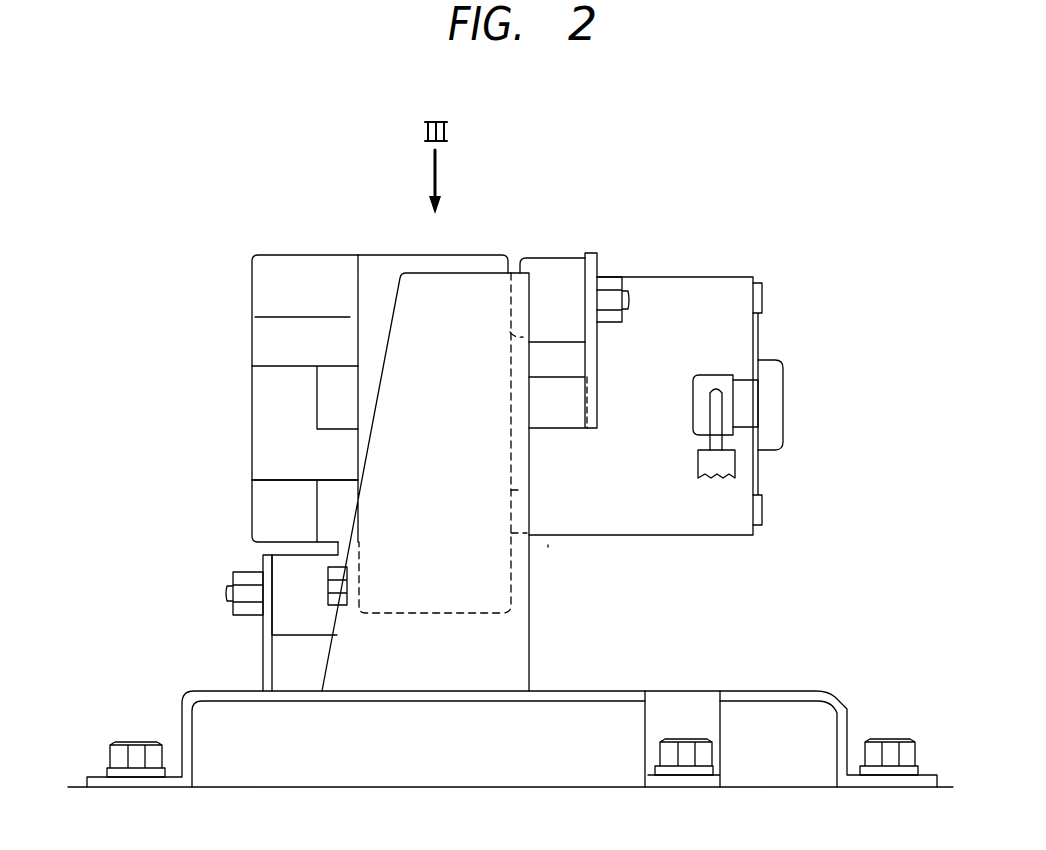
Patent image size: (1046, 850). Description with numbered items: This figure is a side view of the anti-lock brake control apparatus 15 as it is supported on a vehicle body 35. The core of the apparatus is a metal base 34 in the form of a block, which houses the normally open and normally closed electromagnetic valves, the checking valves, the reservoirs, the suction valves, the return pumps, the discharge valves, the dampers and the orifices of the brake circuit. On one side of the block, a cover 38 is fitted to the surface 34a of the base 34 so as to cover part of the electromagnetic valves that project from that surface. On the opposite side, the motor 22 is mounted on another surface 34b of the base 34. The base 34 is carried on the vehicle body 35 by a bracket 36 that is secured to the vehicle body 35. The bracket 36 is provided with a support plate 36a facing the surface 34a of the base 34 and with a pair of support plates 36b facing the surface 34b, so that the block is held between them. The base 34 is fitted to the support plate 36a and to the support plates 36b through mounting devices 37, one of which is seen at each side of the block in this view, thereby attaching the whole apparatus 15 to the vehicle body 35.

The anti-lock brake control apparatus 15 is at (555, 553).
The motor 22 is at (668, 449).
The base 34 is at (397, 437).
The surface of the base 34a is at (355, 445).
The another surface of the base 34b is at (513, 488).
The vehicle body 35 is at (477, 787).
The bracket 36 is at (400, 472).
The support plate 36a is at (268, 633).
The support plates 36b is at (590, 355).
The mounting devices 37 is at (575, 247).
The cover 38 is at (260, 383).